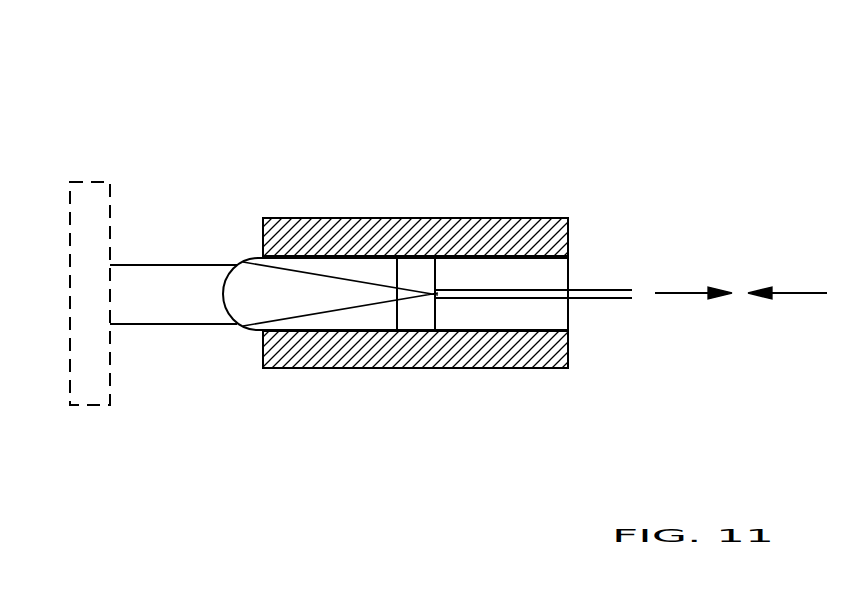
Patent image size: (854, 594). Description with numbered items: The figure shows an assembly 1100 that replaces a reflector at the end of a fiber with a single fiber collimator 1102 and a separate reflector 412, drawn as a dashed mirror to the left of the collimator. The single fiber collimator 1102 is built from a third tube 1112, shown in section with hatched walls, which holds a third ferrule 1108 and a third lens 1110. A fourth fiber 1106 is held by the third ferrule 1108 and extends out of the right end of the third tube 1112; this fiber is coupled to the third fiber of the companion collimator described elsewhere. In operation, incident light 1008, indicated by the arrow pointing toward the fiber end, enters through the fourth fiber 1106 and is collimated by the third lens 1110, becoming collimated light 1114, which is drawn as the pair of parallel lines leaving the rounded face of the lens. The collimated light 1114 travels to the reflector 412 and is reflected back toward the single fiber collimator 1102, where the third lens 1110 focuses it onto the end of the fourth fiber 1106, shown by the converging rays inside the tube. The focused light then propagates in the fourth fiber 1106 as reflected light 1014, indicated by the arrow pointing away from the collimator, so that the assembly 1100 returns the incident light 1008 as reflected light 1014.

The assembly 1100 is at (253, 118).
The reflector 412 is at (100, 182).
The collimated light 1114 is at (203, 327).
The third lens 1110 is at (245, 263).
The single fiber collimator 1102 is at (364, 369).
The third tube 1112 is at (452, 218).
The third ferrule 1108 is at (570, 273).
The fourth fiber 1106 is at (585, 302).
The reflected light 1014 is at (678, 294).
The incident light 1008 is at (805, 293).